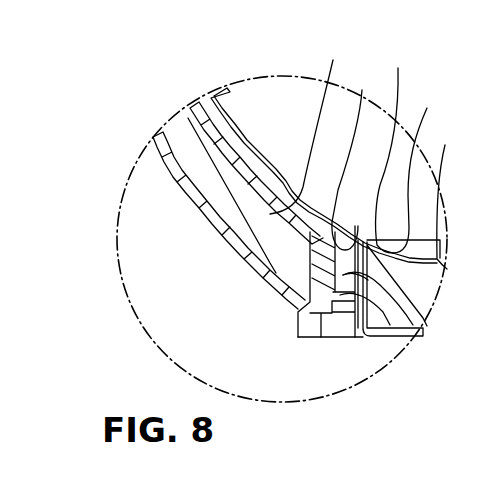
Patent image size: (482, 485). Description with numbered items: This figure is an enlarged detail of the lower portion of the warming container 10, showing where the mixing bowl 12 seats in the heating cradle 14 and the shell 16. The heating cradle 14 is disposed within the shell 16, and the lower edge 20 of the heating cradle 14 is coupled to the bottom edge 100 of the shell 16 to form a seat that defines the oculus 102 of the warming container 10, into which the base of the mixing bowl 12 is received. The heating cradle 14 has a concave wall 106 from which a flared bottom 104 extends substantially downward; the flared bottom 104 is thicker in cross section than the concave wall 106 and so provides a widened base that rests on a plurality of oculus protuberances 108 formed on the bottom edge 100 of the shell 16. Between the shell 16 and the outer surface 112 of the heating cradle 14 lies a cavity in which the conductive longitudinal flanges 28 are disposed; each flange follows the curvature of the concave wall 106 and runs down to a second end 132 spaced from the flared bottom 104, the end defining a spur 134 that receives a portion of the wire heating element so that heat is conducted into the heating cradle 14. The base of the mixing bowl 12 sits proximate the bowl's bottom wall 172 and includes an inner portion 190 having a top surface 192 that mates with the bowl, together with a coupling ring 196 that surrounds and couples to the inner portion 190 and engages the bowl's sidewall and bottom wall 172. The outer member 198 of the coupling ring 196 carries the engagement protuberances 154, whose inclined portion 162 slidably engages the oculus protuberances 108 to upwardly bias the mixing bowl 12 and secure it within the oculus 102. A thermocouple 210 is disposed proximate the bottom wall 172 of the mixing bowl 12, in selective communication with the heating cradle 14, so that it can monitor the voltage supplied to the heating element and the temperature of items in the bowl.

The warming container 10 is at (433, 396).
The mixing bowl 12 is at (290, 124).
The heating cradle 14 is at (247, 136).
The shell 16 is at (189, 229).
The lower edge 20 is at (310, 247).
The conductive longitudinal flanges 28 is at (190, 137).
The bottom edge 100 is at (298, 296).
The oculus 102 is at (422, 336).
The flared bottom 104 is at (310, 268).
The concave wall 106 is at (243, 137).
The oculus protuberances 108 is at (323, 303).
The outer surface 112 is at (190, 118).
The second end 132 is at (310, 125).
The spur 134 is at (268, 216).
The engagement protuberances 154 is at (350, 313).
The inclined portion 162 is at (342, 313).
The bottom wall 172 is at (397, 151).
The inner portion 190 is at (428, 290).
The top surface 192 is at (415, 187).
The coupling ring 196 is at (373, 280).
The outer member 198 is at (354, 174).
The thermocouple 210 is at (420, 166).